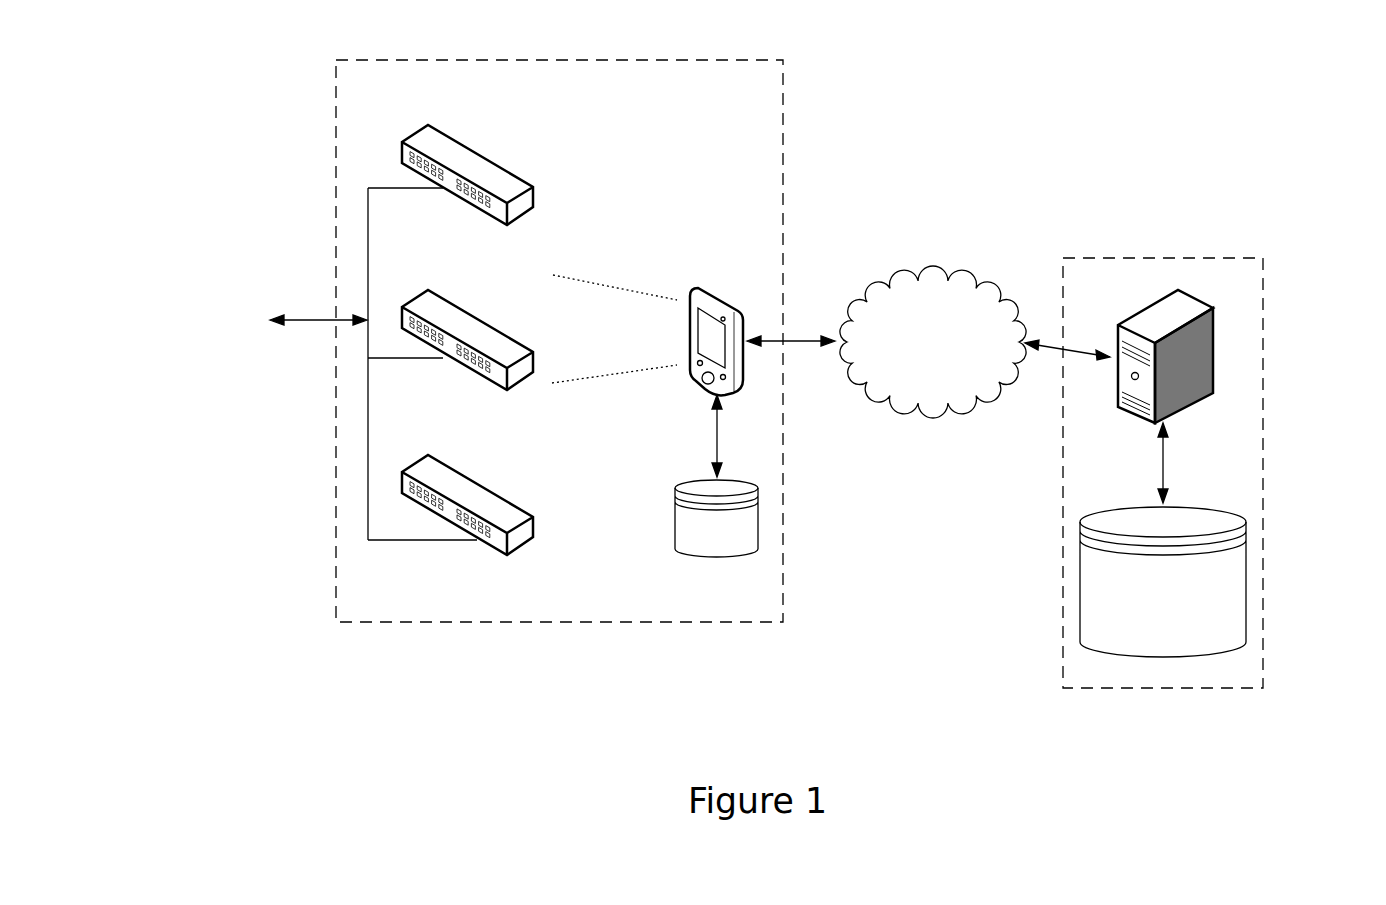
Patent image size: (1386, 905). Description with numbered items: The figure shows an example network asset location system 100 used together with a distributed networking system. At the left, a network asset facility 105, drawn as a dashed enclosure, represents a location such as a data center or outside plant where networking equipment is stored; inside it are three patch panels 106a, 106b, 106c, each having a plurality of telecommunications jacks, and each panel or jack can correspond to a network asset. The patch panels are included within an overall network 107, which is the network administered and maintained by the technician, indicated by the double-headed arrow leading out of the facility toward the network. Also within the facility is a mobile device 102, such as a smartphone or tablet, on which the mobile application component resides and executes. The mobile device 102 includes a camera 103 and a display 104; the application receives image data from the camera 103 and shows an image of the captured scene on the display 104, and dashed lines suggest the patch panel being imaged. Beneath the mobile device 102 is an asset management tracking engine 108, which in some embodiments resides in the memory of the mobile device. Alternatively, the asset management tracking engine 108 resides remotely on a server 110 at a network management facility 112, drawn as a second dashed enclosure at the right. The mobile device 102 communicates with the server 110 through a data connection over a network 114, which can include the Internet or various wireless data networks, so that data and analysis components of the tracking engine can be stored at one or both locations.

The network asset location system 100 is at (355, 694).
The mobile device 102 is at (743, 315).
The camera 103 is at (723, 318).
The display 104 is at (715, 340).
The network asset facility 105 is at (783, 120).
The patch panel 106a is at (470, 150).
The patch panel 106b is at (445, 305).
The patch panel 106c is at (477, 482).
The network 107 is at (318, 320).
The asset management tracking engine 108 is at (758, 517).
The server 110 is at (1215, 357).
The network management facility 112 is at (1212, 258).
The network 114 is at (933, 342).